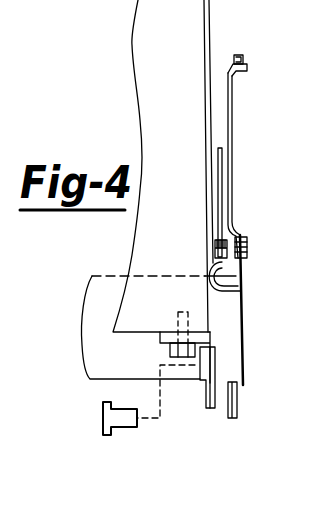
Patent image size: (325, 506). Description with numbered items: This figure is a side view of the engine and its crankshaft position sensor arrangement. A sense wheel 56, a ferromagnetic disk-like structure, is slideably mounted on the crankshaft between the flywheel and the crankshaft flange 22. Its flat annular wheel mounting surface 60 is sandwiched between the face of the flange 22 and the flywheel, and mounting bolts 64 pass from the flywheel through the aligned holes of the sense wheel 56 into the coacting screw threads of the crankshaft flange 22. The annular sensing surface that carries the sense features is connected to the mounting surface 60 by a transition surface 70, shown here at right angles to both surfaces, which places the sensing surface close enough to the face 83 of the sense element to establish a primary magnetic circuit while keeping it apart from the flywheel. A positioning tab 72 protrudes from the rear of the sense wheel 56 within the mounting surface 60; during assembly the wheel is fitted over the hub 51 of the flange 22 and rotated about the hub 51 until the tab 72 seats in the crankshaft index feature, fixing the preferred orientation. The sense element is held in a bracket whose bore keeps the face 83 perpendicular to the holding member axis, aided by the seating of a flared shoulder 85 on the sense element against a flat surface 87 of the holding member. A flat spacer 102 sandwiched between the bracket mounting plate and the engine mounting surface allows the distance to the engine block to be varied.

The crankshaft flange 22 is at (218, 402).
The hub 51 is at (243, 375).
The sense wheel 56 is at (217, 150).
The wheel mounting surface 60 is at (242, 282).
The mounting bolts 64 is at (247, 248).
The transition surface 70 is at (230, 232).
The positioning tab 72 is at (200, 300).
The face 83 is at (140, 422).
The flared shoulder 85 is at (112, 433).
The flat surface 87 is at (200, 378).
The flat spacer 102 is at (160, 340).